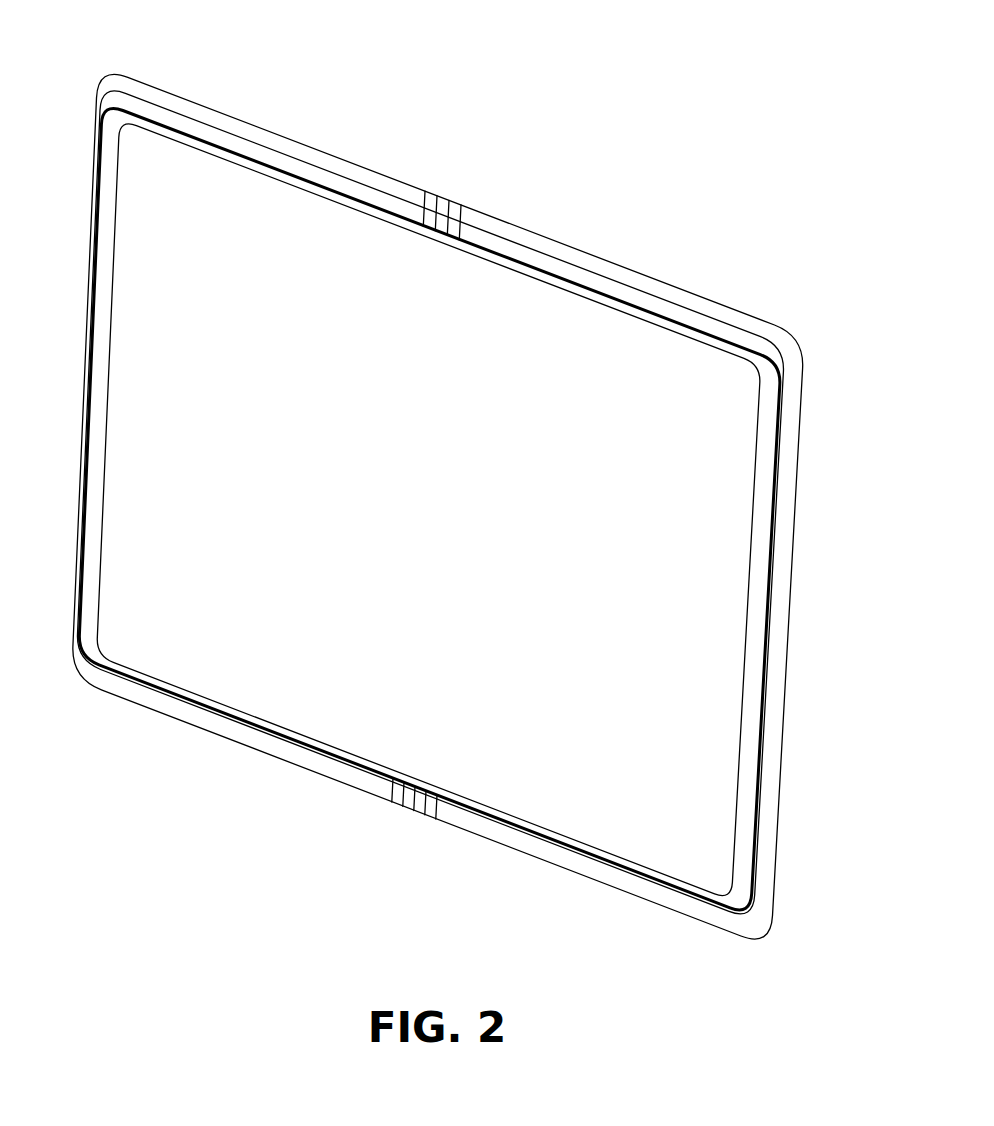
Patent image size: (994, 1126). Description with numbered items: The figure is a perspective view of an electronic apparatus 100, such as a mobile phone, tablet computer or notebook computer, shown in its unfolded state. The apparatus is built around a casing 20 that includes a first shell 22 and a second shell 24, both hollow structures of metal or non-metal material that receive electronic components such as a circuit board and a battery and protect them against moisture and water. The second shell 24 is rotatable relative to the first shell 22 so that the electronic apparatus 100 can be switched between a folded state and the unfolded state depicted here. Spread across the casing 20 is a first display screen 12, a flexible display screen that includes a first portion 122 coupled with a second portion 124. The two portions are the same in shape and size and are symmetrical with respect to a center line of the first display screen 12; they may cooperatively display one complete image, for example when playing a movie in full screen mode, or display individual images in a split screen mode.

The electronic apparatus 100 is at (433, 478).
The casing 20 is at (438, 506).
The first shell 22 is at (393, 188).
The second shell 24 is at (585, 257).
The first display screen 12 is at (421, 508).
The first portion 122 is at (232, 675).
The second portion 124 is at (575, 790).